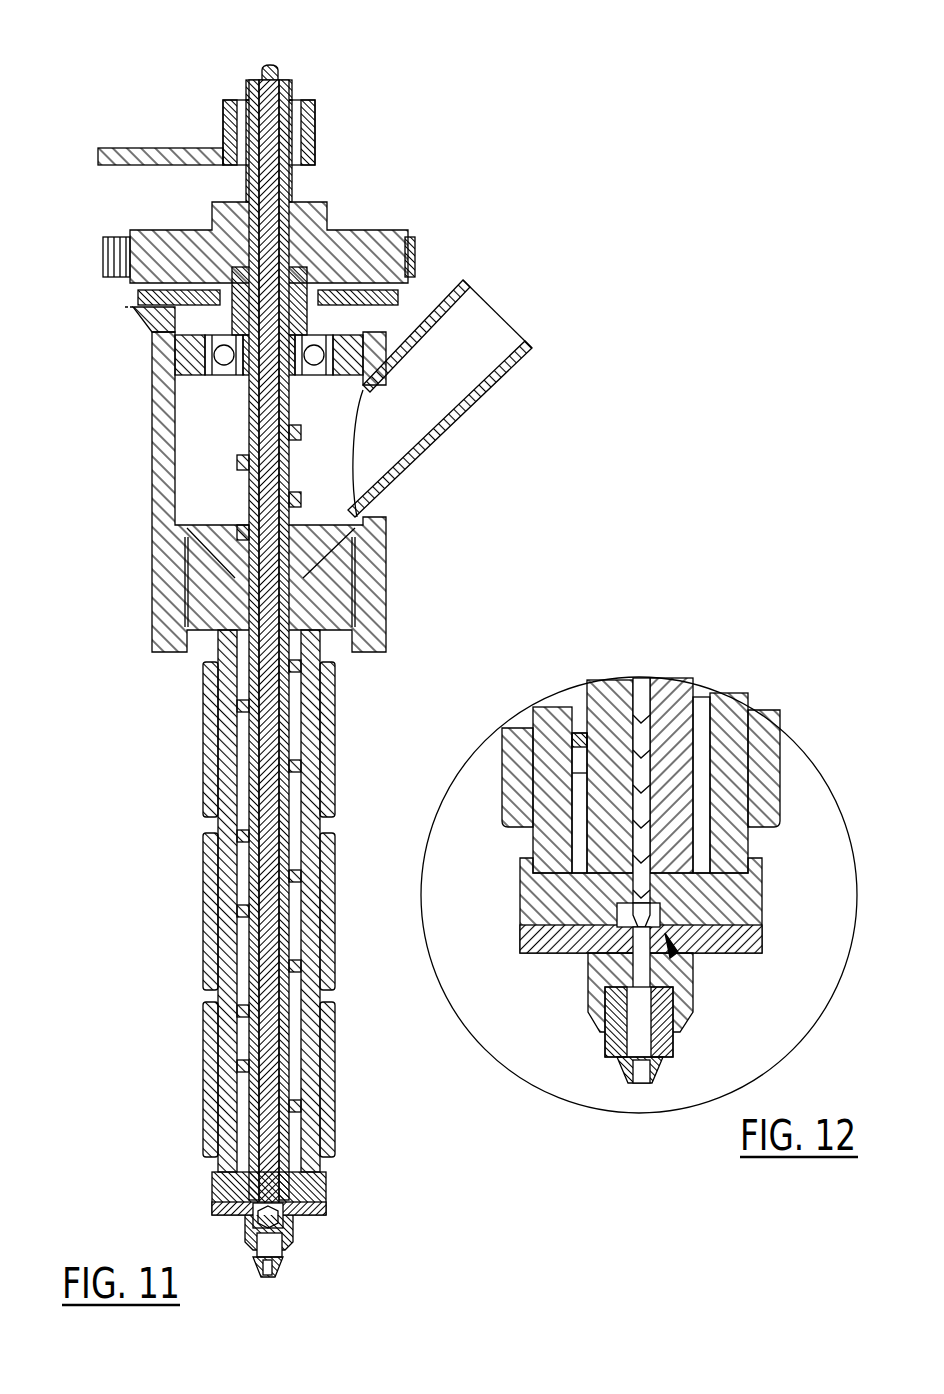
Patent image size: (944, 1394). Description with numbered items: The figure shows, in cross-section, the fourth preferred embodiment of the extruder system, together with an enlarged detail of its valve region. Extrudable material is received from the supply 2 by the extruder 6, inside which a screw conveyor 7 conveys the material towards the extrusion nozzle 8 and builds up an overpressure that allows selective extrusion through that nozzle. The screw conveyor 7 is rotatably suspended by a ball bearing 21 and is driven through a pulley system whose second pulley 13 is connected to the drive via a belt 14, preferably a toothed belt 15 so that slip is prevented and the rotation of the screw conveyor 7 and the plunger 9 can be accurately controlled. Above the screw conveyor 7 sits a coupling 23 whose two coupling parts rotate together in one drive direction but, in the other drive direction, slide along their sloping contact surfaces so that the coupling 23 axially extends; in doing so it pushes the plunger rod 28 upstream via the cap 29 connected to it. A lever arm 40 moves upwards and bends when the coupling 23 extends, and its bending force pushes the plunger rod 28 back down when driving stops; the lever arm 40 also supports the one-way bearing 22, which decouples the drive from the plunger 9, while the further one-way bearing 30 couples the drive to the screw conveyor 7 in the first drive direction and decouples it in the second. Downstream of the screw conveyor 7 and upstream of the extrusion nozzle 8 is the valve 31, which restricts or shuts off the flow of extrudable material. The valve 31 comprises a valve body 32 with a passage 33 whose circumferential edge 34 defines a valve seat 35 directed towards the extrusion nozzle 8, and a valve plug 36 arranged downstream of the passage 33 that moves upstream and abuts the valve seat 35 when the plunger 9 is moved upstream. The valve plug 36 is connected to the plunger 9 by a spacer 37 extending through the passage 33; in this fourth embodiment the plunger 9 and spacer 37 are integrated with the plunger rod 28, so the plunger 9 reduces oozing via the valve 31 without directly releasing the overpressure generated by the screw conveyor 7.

In FIG. 11, the supply 2 is at (465, 393).
In FIG. 11, the extruder 6 is at (227, 825).
In FIG. 11, the screw conveyor 7 is at (248, 545).
In FIG. 11, the extrusion nozzle 8 is at (267, 1273).
In FIG. 12, the extrusion nozzle 8 is at (640, 1073).
In FIG. 12, the plunger 9 is at (642, 693).
In FIG. 11, the second pulley 13 is at (368, 245).
In FIG. 11, the belt 14 is at (110, 255).
In FIG. 11, the toothed belt 15 is at (416, 252).
In FIG. 11, the ball bearing 21 is at (210, 368).
In FIG. 11, the one-way bearing 22 is at (295, 133).
In FIG. 11, the coupling 23 is at (322, 177).
In FIG. 11, the plunger rod 28 is at (268, 65).
In FIG. 12, the plunger rod 28 is at (678, 733).
In FIG. 11, the cap 29 is at (285, 88).
In FIG. 11, the further one-way bearing 30 is at (178, 358).
In FIG. 11, the valve 31 is at (352, 1238).
In FIG. 12, the valve body 32 is at (737, 893).
In FIG. 12, the passage 33 is at (660, 933).
In FIG. 12, the circumferential edge 34 is at (573, 963).
In FIG. 12, the valve seat 35 is at (615, 927).
In FIG. 12, the valve plug 36 is at (658, 957).
In FIG. 12, the spacer 37 is at (638, 903).
In FIG. 11, the lever arm 40 is at (152, 157).